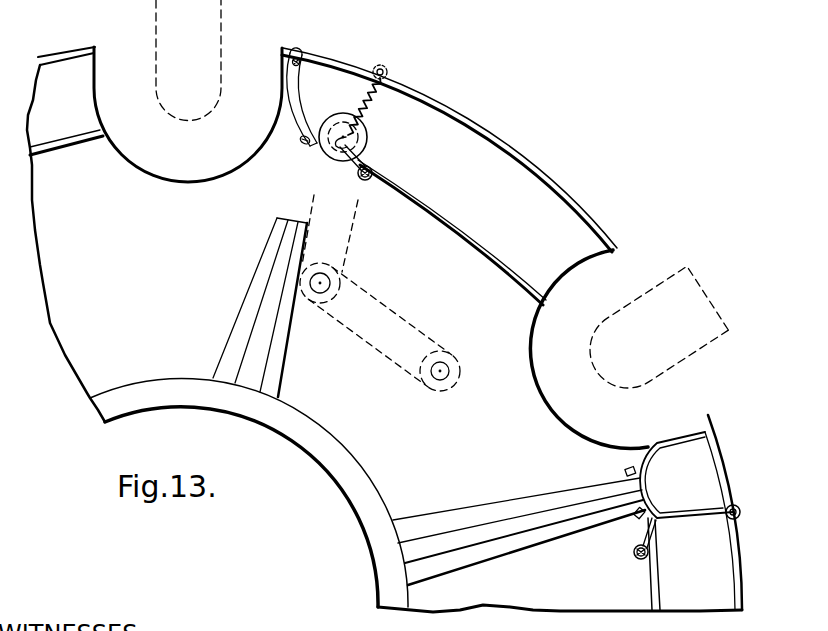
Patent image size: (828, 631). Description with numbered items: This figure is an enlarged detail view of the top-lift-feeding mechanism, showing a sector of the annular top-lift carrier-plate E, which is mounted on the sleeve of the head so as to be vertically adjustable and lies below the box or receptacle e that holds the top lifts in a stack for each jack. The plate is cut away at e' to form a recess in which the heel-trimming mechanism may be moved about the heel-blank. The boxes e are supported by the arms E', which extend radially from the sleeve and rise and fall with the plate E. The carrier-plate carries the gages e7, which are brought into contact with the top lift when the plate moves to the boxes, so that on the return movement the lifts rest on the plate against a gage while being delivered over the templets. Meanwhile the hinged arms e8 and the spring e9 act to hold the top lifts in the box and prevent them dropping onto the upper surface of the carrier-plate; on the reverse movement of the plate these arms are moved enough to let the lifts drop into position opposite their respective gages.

The annular plate E is at (384, 329).
The arms E' is at (424, 401).
The box or receptacle e is at (670, 521).
The recess e' is at (411, 224).
The gages e7 is at (296, 92).
The hinged arms e8 is at (362, 108).
The spring e9 is at (360, 150).